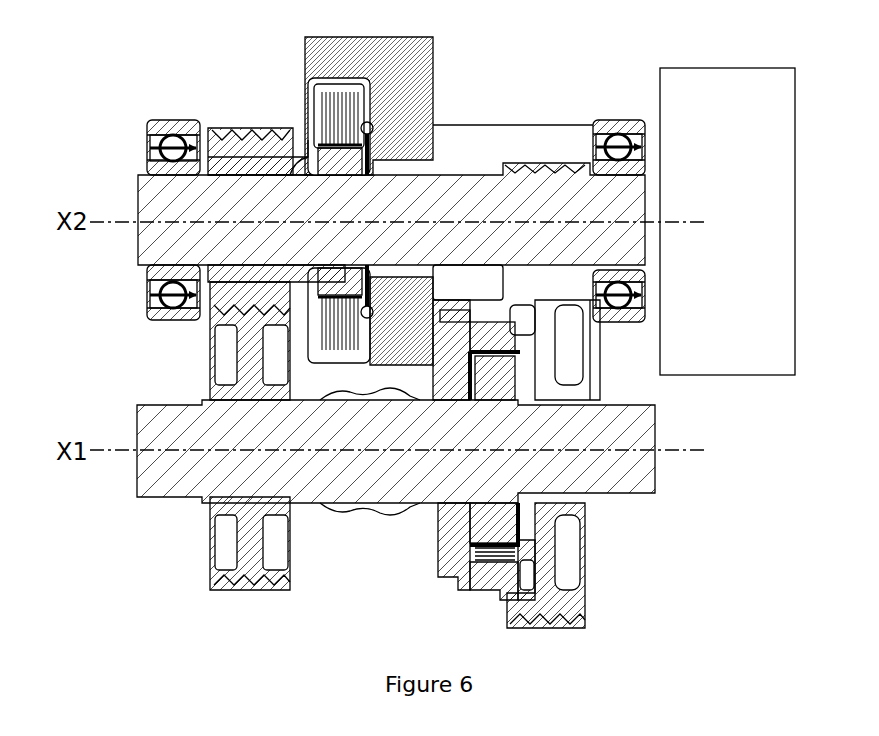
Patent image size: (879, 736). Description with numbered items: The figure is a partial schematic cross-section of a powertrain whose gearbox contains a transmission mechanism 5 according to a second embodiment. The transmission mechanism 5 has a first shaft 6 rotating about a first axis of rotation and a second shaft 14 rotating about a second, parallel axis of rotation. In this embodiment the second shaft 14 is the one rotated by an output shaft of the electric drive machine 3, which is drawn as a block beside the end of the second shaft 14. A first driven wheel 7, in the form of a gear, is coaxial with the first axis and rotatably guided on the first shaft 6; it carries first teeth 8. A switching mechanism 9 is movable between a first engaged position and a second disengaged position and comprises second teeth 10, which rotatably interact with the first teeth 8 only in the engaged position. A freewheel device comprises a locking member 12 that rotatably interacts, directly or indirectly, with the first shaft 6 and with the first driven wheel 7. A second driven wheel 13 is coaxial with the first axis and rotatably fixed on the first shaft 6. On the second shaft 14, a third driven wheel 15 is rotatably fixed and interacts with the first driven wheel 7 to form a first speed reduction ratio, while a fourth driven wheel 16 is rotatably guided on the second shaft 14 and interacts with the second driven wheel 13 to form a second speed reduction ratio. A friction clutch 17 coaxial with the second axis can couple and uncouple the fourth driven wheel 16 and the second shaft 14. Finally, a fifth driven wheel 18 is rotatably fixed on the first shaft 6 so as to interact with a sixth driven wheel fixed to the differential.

The electric drive machine 3 is at (656, 70).
The transmission mechanism 5 is at (136, 80).
The first shaft 6 is at (134, 400).
The first driven wheel 7 is at (503, 612).
The first teeth 8 is at (517, 553).
The switching mechanism 9 is at (433, 585).
The second teeth 10 is at (482, 315).
The locking member 12 is at (518, 540).
The second driven wheel 13 is at (207, 578).
The second shaft 14 is at (132, 188).
The third driven wheel 15 is at (553, 150).
The fourth driven wheel 16 is at (258, 125).
The friction clutch 17 is at (305, 100).
The fifth driven wheel 18 is at (332, 518).